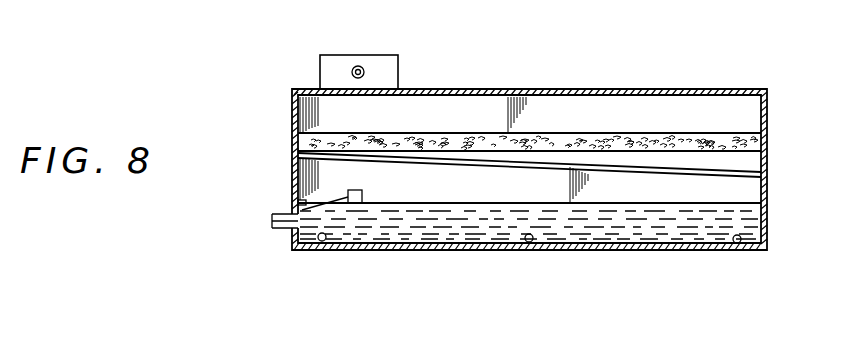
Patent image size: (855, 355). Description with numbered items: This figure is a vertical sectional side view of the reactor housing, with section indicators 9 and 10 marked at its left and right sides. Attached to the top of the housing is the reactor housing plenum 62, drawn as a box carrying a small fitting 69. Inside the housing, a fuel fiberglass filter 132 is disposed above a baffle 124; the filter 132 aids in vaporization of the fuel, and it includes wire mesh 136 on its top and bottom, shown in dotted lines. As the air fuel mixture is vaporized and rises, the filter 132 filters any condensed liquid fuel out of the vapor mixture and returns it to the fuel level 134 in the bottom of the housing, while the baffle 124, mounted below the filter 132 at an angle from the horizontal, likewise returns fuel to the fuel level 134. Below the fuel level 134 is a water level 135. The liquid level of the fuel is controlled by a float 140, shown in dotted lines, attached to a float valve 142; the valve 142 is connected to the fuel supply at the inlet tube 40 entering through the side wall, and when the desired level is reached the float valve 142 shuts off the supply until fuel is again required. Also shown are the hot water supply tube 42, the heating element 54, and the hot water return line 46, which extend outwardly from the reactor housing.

The section line 9- 9 is at (793, 182).
The section line 10- 10 is at (790, 246).
The inlet tube 40 is at (282, 228).
The hot water supply tube 42 is at (322, 247).
The hot water return line 46 is at (733, 250).
The heating element 54 is at (526, 252).
The reactor housing plenum 62 is at (385, 70).
The indicator 69 is at (361, 69).
The baffle 124 is at (527, 168).
The fuel fiberglass filter 132 is at (735, 150).
The fuel level 134 is at (750, 216).
The water level 135 is at (650, 252).
The wire mesh 136 is at (660, 97).
The float 140 is at (376, 186).
The float valve 142 is at (300, 205).